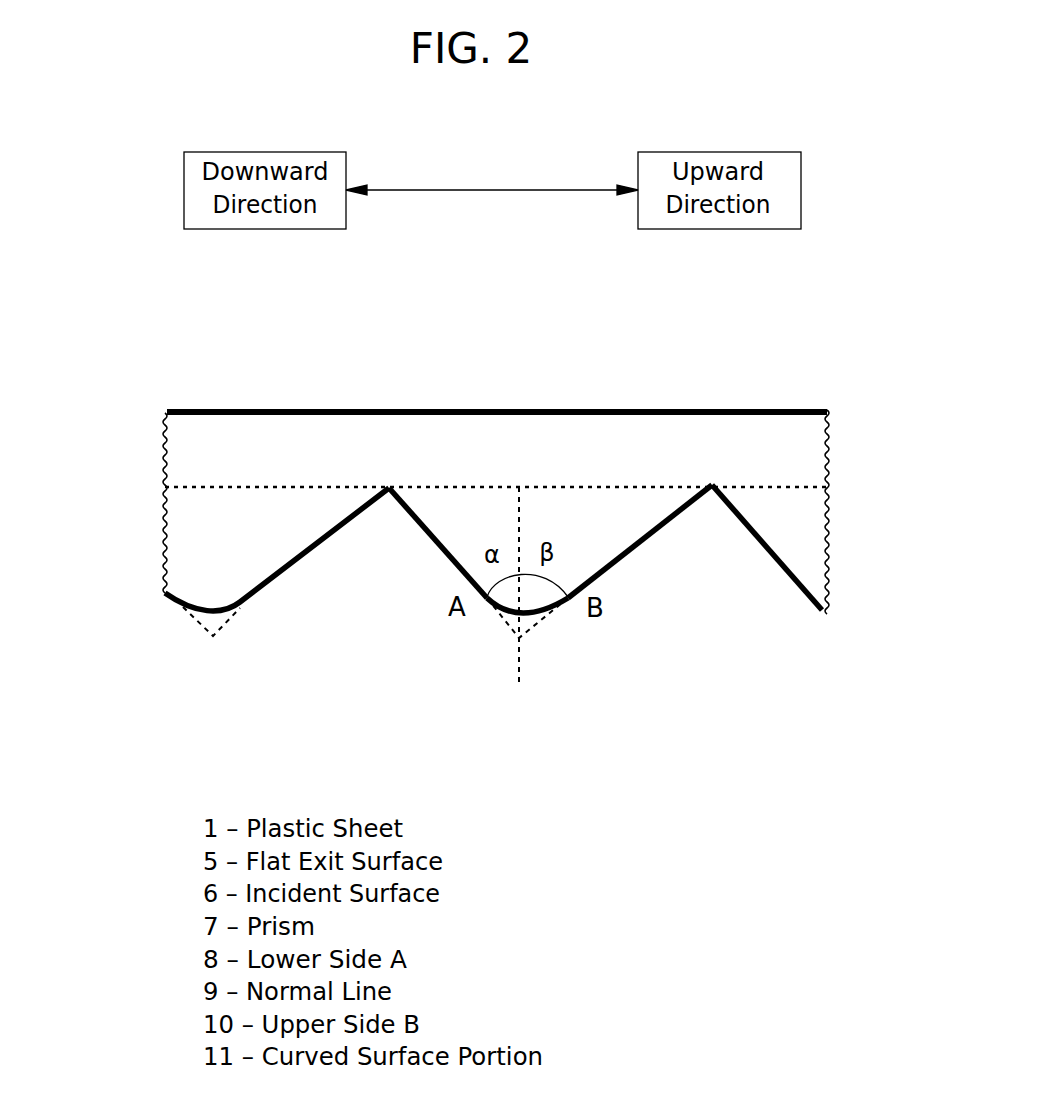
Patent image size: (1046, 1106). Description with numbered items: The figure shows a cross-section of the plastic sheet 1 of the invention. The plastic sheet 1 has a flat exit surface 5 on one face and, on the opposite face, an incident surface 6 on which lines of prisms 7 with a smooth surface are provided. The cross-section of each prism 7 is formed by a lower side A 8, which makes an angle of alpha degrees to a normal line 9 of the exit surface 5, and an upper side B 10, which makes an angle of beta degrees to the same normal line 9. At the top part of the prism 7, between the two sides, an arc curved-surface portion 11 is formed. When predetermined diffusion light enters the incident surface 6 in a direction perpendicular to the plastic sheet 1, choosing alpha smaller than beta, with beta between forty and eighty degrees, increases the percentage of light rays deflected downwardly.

The plastic sheet 1 is at (828, 470).
The flat exit surface 5 is at (245, 410).
The incident surface 6 is at (318, 548).
The prism 7 is at (618, 505).
The lower side A 8 is at (435, 547).
The normal line 9 is at (520, 692).
The upper side B 10 is at (637, 550).
The arc curved-surface portion 11 is at (545, 618).